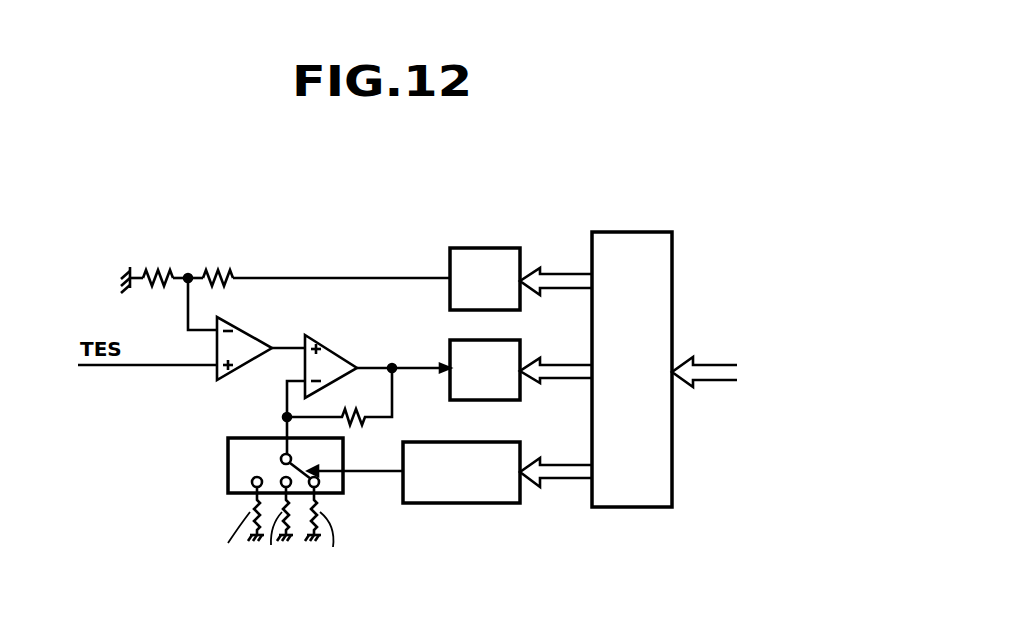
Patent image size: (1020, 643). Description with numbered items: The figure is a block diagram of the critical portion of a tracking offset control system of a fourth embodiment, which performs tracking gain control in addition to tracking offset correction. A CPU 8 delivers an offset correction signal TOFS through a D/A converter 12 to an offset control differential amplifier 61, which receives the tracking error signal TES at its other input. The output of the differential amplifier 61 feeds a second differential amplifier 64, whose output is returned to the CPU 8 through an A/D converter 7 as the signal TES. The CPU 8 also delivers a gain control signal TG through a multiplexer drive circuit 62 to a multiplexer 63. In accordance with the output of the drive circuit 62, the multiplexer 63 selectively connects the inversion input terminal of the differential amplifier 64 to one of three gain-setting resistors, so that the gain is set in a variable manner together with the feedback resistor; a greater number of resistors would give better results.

The offset control differential amplifier 61 is at (255, 338).
The differential amplifier 64 is at (347, 357).
The multiplexer 63 is at (228, 477).
The multiplexer drive circuit 62 is at (462, 505).
The D/A converter 12 is at (473, 248).
The A/D converter 7 is at (450, 343).
The CPU 8 is at (650, 232).